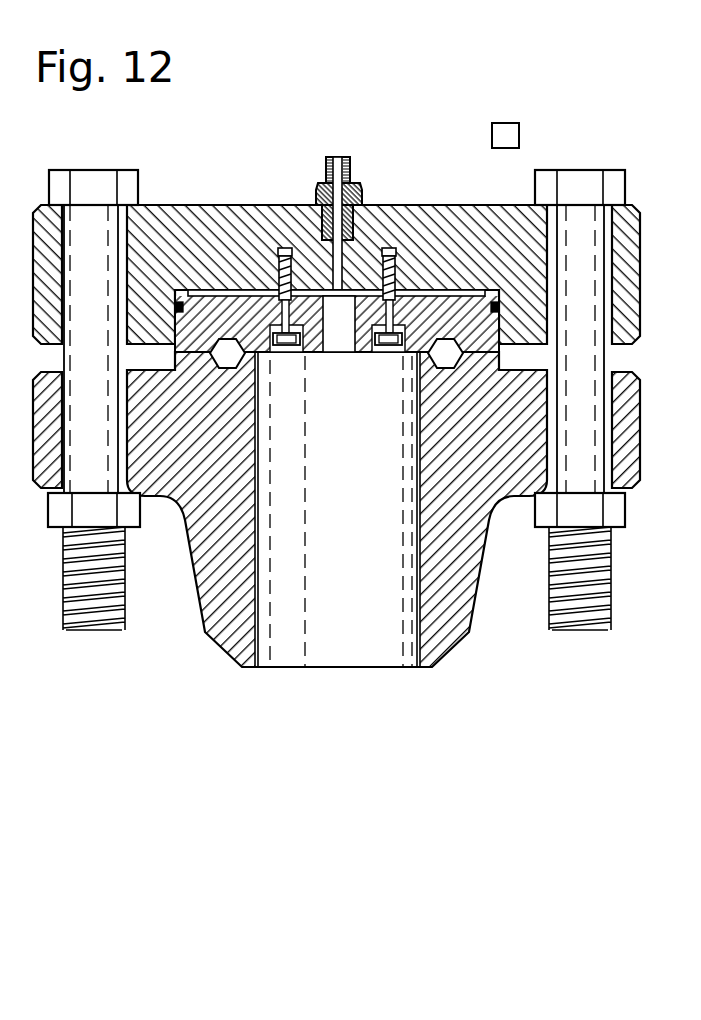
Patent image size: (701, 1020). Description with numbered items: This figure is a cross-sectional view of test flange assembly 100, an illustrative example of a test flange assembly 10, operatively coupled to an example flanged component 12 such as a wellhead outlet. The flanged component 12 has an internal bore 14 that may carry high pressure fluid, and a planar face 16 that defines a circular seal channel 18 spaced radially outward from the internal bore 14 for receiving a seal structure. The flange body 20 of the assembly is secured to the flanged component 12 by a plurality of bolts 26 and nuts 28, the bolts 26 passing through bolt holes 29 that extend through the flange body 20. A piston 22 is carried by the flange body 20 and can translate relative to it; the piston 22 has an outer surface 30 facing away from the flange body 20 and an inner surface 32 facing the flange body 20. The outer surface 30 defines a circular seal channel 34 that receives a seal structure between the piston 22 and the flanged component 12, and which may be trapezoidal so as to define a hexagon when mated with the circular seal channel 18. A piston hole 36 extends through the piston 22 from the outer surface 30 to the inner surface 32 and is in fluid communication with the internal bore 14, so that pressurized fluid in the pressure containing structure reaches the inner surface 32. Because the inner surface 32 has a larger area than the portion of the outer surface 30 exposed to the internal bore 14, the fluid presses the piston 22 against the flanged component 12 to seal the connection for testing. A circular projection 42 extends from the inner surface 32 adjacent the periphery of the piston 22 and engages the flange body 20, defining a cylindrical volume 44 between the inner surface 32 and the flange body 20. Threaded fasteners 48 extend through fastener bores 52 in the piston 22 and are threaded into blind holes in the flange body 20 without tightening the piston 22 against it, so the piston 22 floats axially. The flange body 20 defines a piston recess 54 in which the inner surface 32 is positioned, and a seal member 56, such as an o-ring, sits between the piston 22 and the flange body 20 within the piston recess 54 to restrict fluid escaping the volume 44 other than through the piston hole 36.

The test flange assembly 10 is at (627, 83).
The test flange assembly 100 is at (571, 121).
The flanged component 12 is at (350, 510).
The internal bore 14 is at (419, 647).
The planar face 16 is at (198, 347).
The circular seal channel 18 is at (227, 360).
The flange body 20 is at (350, 510).
The piston 22 is at (482, 360).
The bolt 26 is at (108, 170).
The nut 28 is at (128, 528).
The bolt hole 29 is at (366, 387).
The outer surface 30 is at (307, 353).
The inner surface 32 is at (420, 293).
The circular seal channel 34 is at (452, 345).
The piston hole 36 is at (347, 352).
The projection 42 is at (180, 290).
The volume 44 is at (463, 295).
The threaded fastener 48 is at (277, 297).
The fastener bore 52 is at (274, 352).
The piston recess 54 is at (216, 300).
The seal member 56 is at (499, 300).